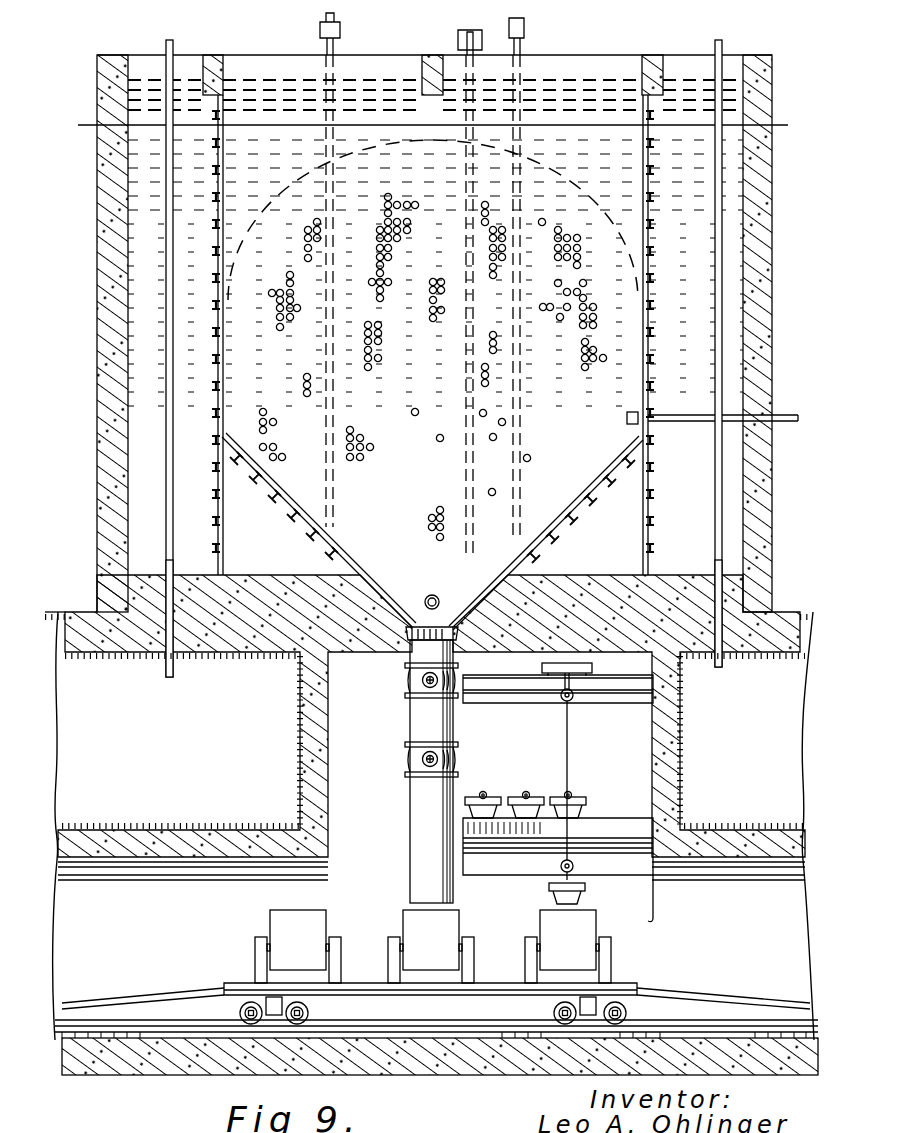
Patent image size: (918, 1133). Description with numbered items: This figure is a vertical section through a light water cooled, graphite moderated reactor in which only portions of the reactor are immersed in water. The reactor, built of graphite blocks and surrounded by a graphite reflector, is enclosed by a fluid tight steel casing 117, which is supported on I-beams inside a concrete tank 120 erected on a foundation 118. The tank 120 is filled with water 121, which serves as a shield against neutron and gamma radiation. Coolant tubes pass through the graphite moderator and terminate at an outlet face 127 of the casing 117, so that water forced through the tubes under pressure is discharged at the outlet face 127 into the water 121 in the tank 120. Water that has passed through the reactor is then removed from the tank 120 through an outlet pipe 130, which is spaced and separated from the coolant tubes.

The fluid tight steel casing 117 is at (263, 215).
The foundation 118 is at (282, 640).
The concrete tank 120 is at (748, 298).
The water 121 is at (683, 270).
The outlet face 127 is at (404, 524).
The outlet pipe 130 is at (441, 586).